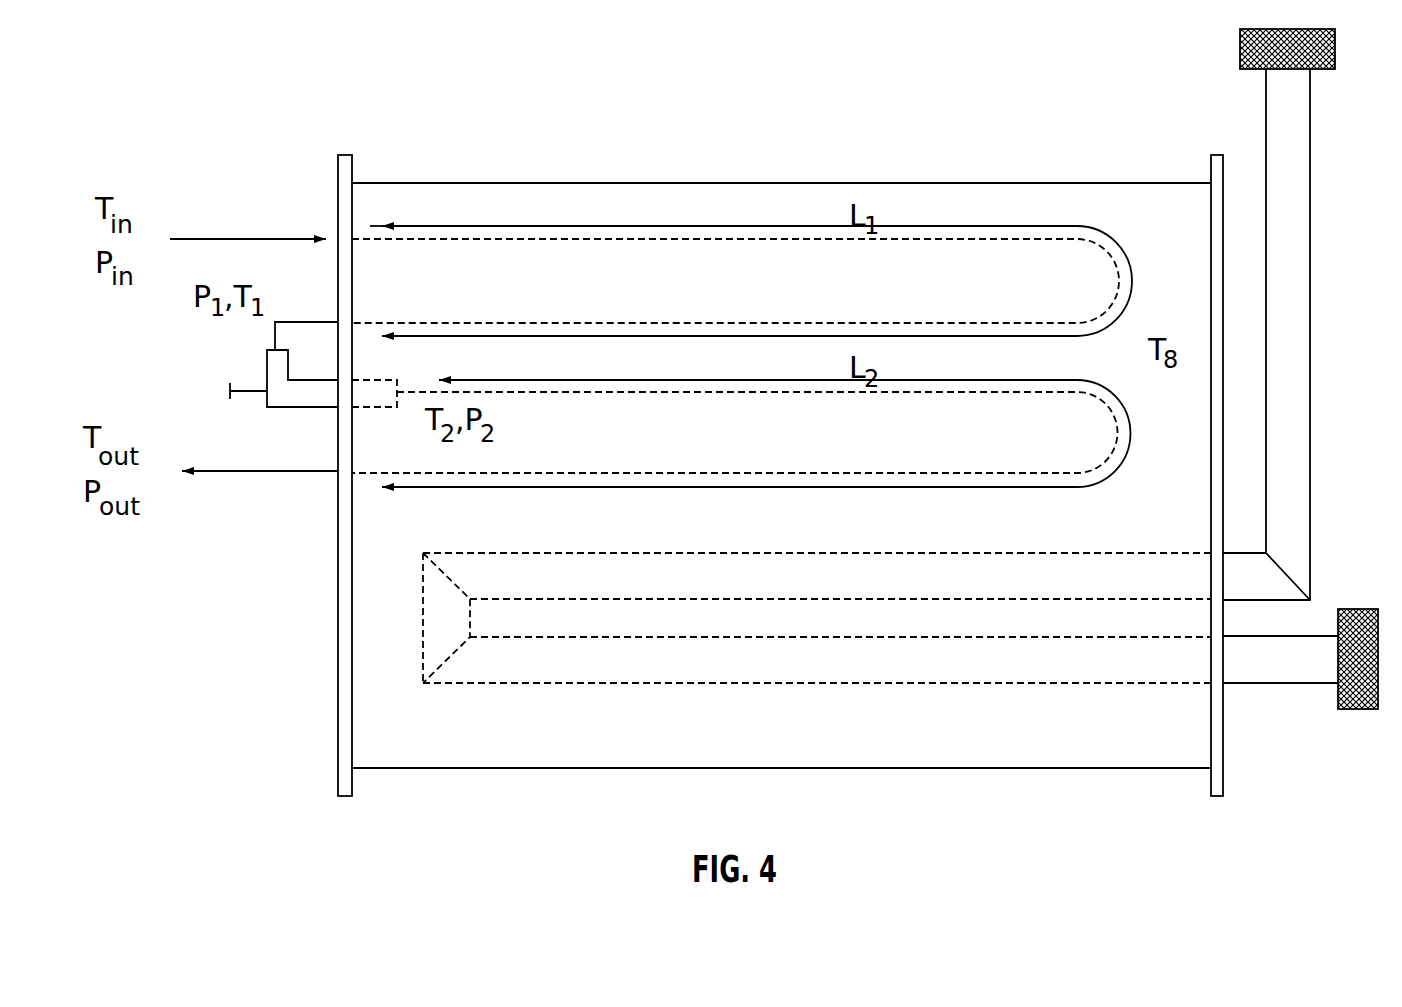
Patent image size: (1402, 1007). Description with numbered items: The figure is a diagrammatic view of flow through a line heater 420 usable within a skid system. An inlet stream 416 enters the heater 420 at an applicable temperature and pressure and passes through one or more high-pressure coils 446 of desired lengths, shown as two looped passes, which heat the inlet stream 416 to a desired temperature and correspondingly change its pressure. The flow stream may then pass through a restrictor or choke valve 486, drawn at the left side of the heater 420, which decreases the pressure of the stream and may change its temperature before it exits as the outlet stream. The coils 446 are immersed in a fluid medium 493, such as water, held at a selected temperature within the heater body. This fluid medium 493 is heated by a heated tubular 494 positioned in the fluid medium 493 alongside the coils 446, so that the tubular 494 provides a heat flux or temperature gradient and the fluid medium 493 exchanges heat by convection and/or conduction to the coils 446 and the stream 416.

The line heater 420 is at (290, 96).
The inlet stream 416 is at (262, 238).
The high-pressure coils 446 is at (677, 226).
The restrictor or choke valve 486 is at (272, 370).
The fluid medium 493 is at (446, 753).
The heated tubular 494 is at (1311, 355).